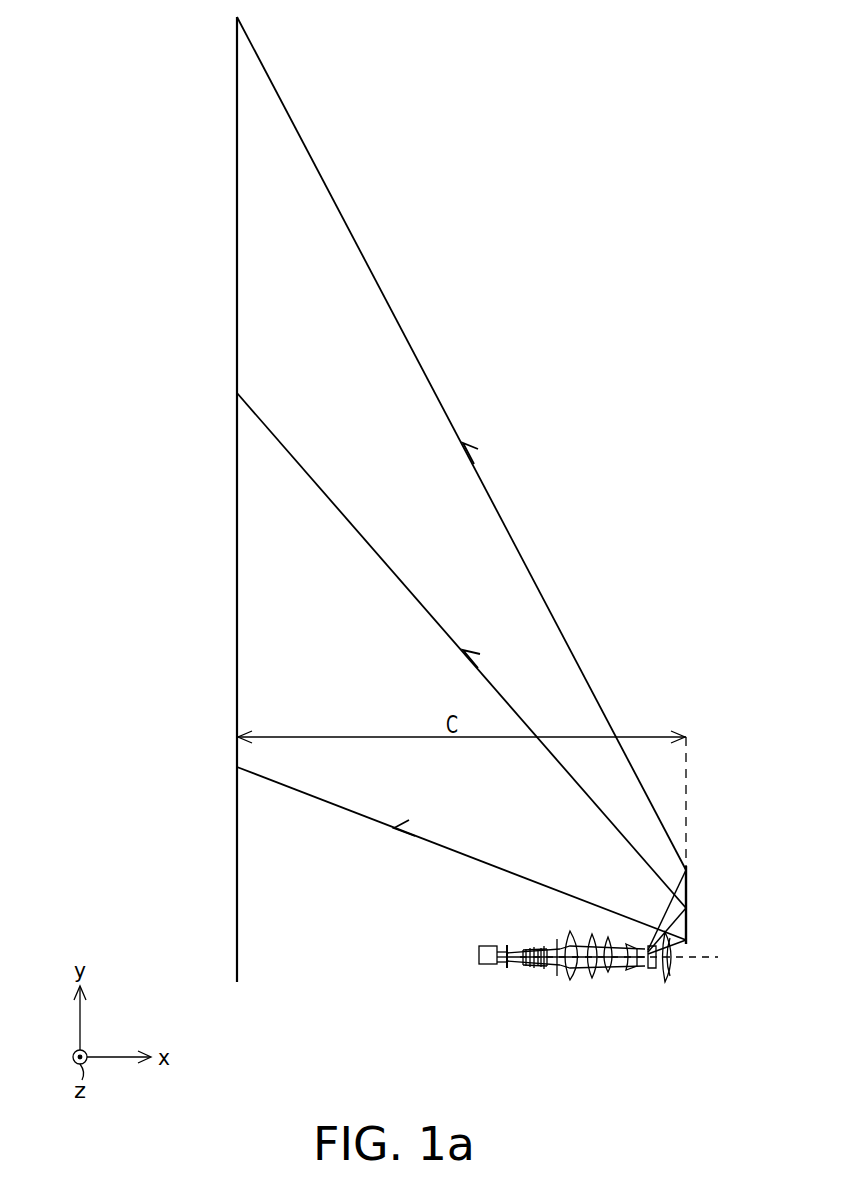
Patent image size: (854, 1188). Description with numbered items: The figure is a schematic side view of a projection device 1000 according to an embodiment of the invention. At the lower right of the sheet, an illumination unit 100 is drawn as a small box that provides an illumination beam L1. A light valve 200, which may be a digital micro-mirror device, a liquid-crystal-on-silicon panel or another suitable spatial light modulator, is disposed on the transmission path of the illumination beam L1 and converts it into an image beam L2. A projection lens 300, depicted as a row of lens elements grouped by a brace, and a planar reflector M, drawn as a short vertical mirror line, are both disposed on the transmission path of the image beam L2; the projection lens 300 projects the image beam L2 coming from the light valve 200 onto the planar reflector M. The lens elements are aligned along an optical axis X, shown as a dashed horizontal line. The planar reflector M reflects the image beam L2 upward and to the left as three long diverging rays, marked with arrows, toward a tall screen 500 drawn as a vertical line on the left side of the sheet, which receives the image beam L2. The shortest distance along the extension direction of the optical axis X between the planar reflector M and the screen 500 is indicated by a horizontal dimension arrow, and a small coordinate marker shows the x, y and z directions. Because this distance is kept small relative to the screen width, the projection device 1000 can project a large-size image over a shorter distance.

The illumination unit 100 is at (484, 964).
The light valve 200 is at (508, 968).
The projection lens 300 is at (662, 990).
The screen 500 is at (237, 958).
The projection device 1000 is at (737, 1106).
The planar reflector M is at (686, 908).
The optical axis X is at (718, 957).
The illumination beam L1 is at (500, 950).
The image beam L2 is at (513, 950).